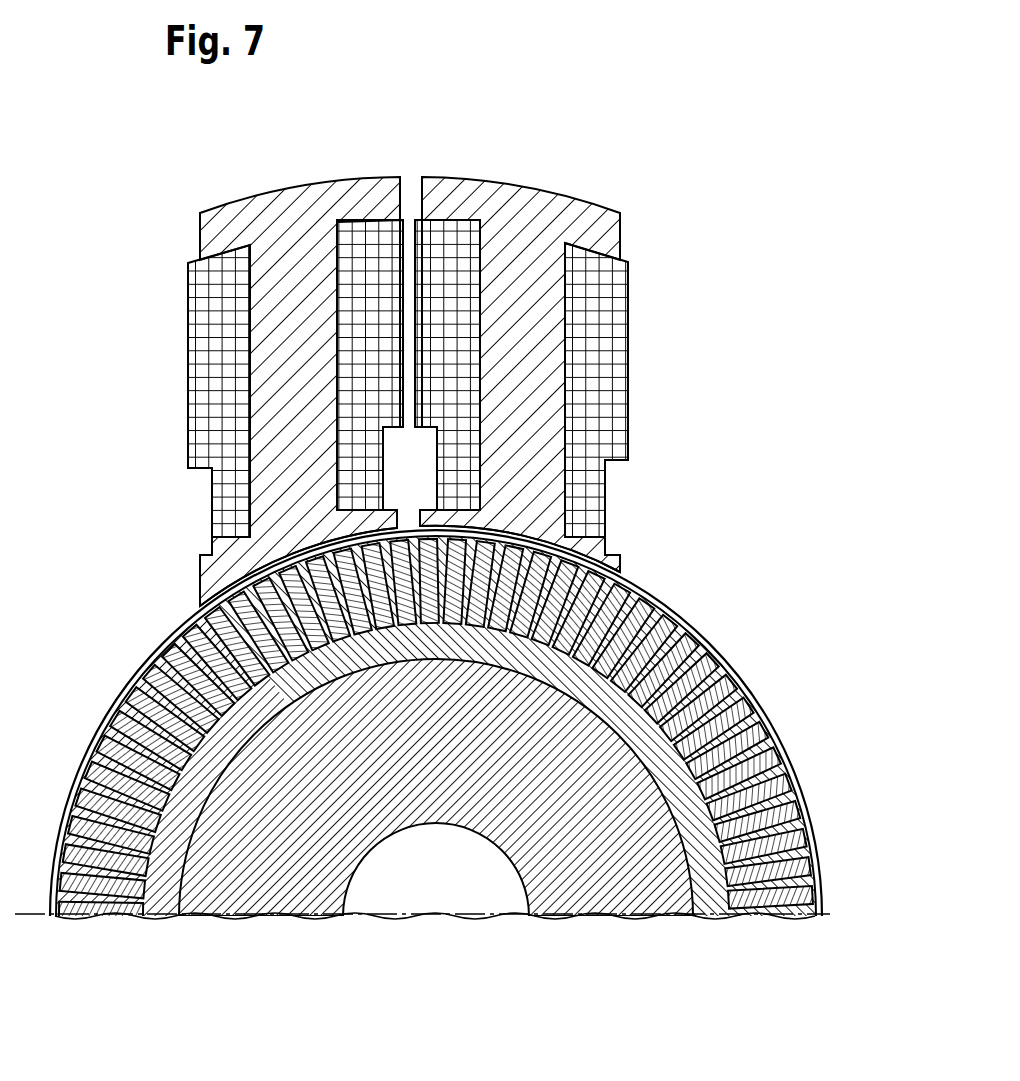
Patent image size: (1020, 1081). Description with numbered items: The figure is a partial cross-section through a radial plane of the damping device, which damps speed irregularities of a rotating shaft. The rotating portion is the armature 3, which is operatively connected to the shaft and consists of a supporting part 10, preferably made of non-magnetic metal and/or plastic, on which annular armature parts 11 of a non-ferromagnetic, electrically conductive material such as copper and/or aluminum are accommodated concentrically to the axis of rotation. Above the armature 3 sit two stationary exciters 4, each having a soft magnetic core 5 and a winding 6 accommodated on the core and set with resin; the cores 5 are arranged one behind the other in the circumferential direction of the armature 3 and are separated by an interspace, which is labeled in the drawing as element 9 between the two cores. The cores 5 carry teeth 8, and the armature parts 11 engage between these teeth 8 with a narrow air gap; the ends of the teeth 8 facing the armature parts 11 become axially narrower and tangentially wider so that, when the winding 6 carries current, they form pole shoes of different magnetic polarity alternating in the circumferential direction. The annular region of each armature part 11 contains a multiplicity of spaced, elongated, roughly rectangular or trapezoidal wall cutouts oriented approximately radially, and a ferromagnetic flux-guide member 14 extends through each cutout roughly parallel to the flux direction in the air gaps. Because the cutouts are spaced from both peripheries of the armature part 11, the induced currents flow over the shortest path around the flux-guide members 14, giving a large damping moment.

The armature 3 is at (745, 607).
The exciter 4 is at (150, 280).
The soft magnetic core 5 is at (262, 222).
The winding 6 is at (205, 318).
The teeth 8 is at (200, 568).
The slit 9 is at (348, 195).
The supporting part 10 is at (605, 883).
The armature part 11 is at (820, 888).
The flux-guide member 14 is at (745, 678).